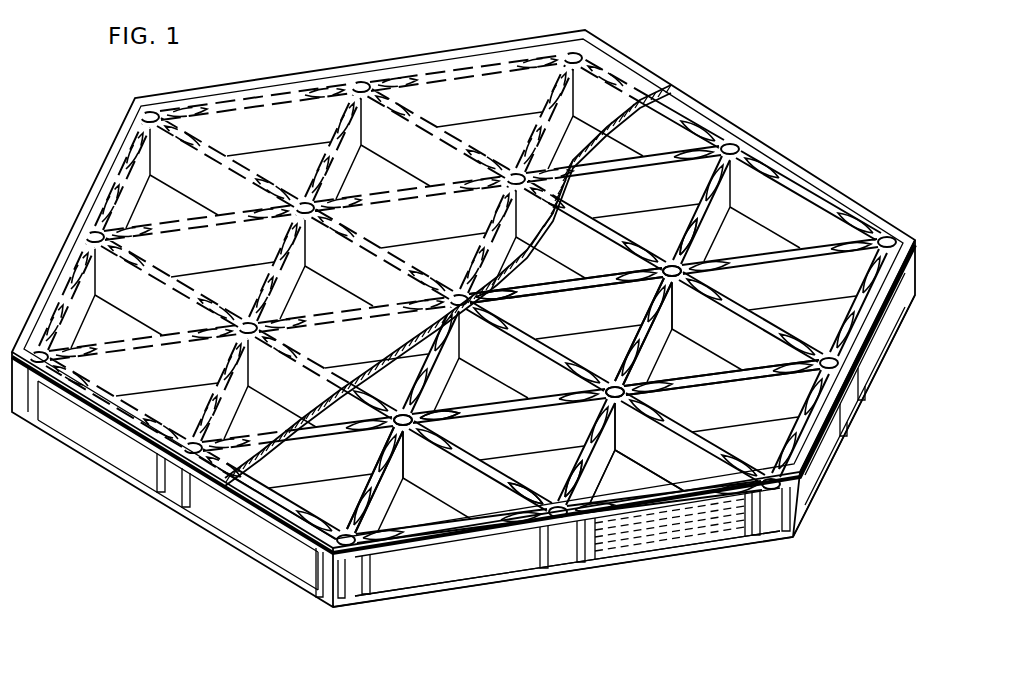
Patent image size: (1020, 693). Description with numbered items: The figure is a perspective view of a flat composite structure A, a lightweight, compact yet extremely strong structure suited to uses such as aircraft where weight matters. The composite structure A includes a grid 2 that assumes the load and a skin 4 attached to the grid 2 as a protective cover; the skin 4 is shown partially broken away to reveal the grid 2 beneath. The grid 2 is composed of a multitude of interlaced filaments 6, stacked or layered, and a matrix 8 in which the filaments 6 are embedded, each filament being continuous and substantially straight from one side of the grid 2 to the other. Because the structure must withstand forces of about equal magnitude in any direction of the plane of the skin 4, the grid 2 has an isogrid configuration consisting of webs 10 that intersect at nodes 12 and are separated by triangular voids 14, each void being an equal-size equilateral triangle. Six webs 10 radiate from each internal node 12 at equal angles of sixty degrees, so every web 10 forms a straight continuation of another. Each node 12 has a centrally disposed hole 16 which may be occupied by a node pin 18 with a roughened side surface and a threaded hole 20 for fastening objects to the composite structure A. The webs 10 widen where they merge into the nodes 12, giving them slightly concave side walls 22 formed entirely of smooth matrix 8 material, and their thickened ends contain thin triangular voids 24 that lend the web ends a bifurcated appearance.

The grid 2 is at (806, 180).
The skin 4 is at (612, 84).
The filaments 6 is at (696, 527).
The matrix 8 is at (648, 528).
The webs 10 is at (750, 316).
The nodes 12 is at (666, 258).
The triangular voids 14 is at (823, 323).
The hole 16 is at (675, 283).
The node pin 18 is at (651, 286).
The threaded hole 20 is at (706, 262).
The side walls 22 is at (674, 452).
The thin triangular voids 24 is at (508, 298).
The composite structure A is at (172, 538).